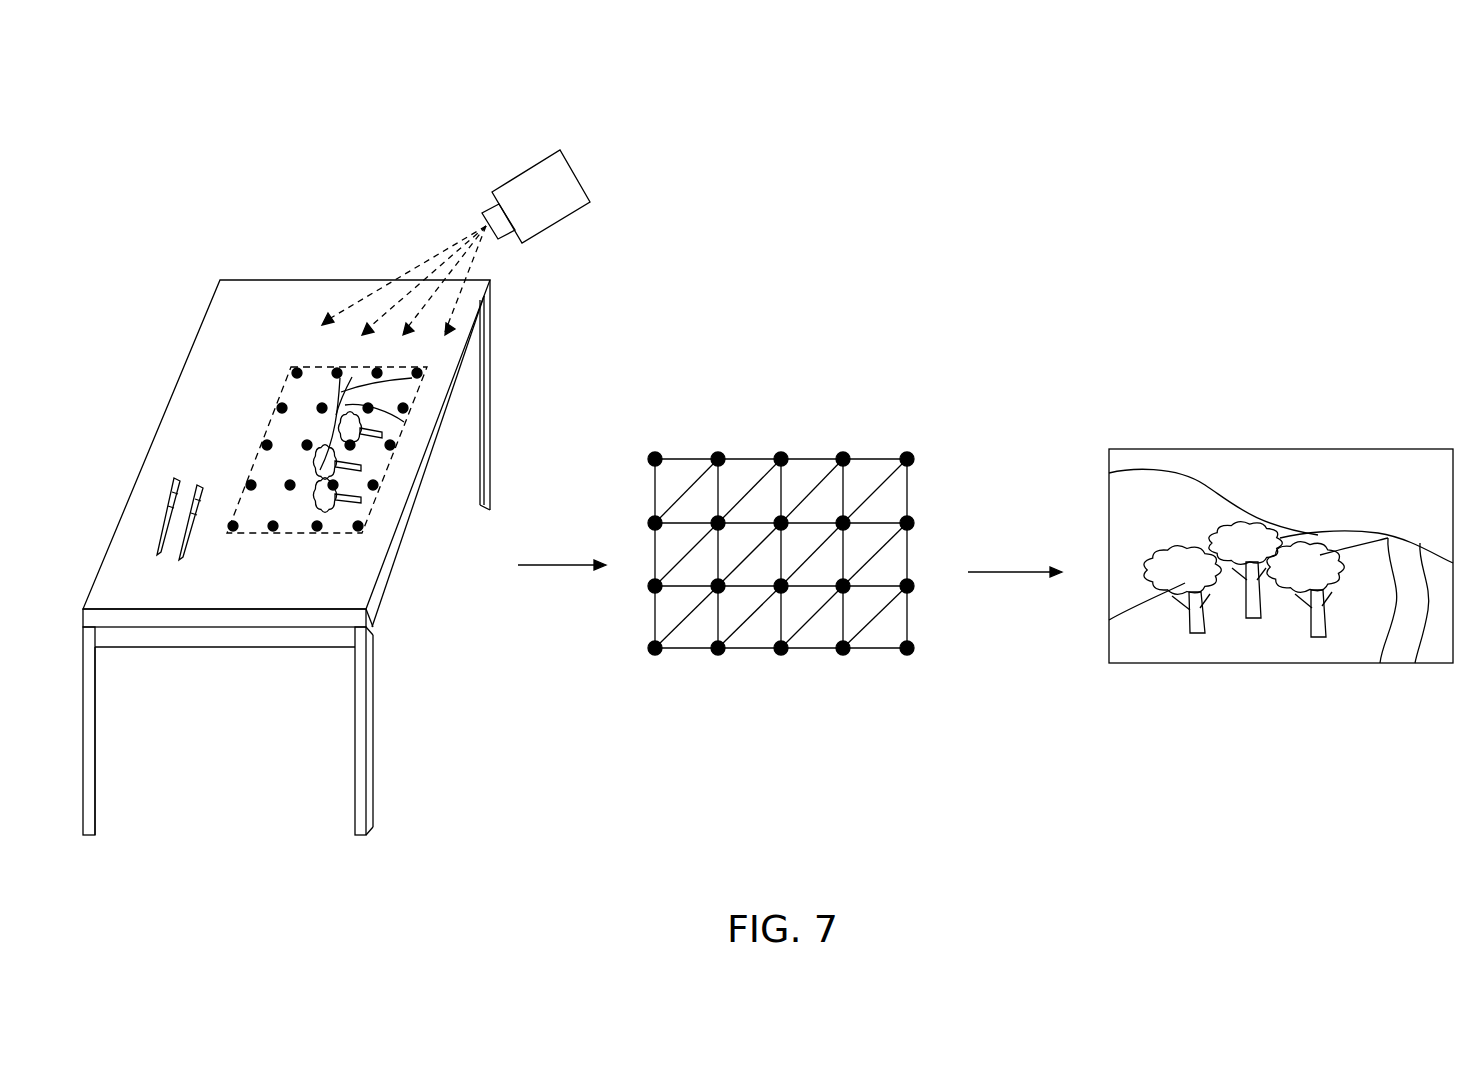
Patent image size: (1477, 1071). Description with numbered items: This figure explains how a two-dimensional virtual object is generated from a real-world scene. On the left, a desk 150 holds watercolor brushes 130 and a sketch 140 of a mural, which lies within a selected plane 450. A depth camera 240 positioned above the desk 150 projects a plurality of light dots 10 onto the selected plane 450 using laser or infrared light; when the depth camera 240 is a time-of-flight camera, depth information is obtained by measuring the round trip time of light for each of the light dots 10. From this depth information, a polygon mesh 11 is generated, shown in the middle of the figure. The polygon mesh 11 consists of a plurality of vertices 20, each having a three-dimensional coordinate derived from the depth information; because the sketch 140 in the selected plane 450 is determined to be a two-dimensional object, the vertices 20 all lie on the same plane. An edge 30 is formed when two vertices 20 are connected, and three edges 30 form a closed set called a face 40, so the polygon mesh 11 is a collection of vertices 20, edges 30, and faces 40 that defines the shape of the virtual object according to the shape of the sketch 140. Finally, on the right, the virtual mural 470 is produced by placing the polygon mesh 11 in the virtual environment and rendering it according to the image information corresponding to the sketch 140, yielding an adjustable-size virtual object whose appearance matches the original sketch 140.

The light dots 10 is at (297, 373).
The polygon mesh 11 is at (794, 501).
The vertices 20 is at (842, 458).
The edge 30 is at (906, 488).
The face 40 is at (869, 636).
The watercolor brushes 130 is at (165, 520).
The sketch 140 is at (372, 494).
The desk 150 is at (364, 700).
The depth camera 240 is at (541, 165).
The selected plane 450 is at (370, 516).
The virtual mural 470 is at (1331, 449).